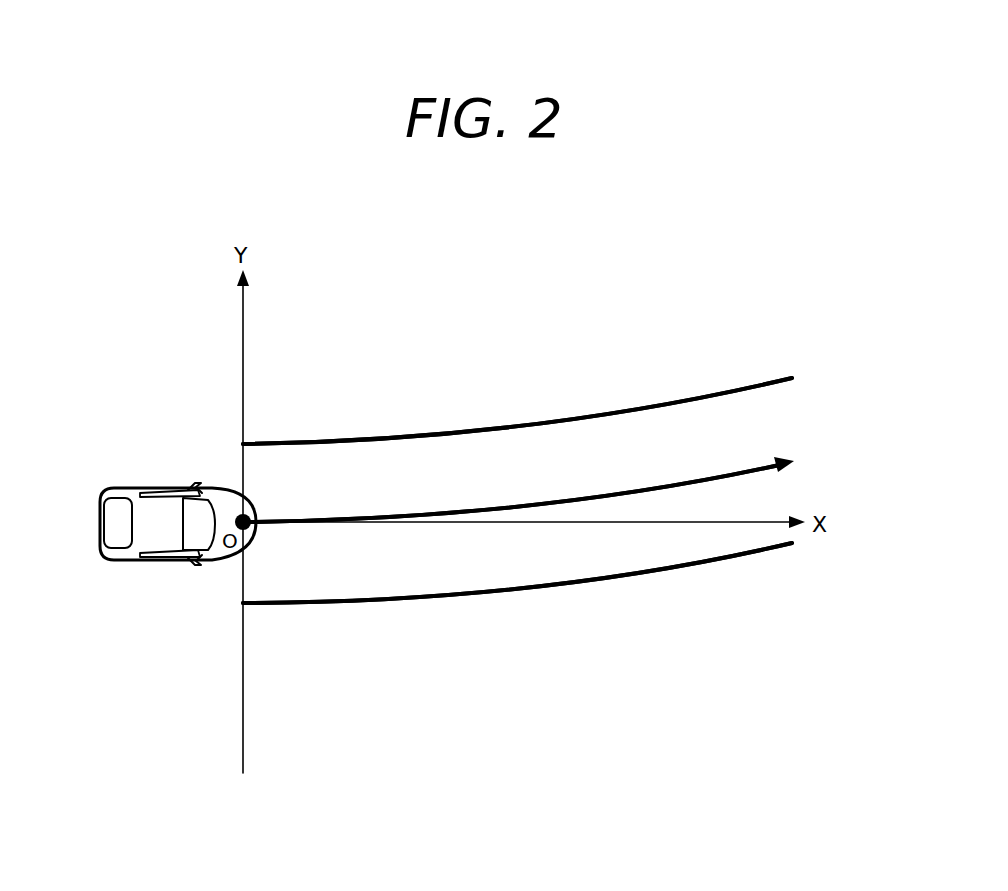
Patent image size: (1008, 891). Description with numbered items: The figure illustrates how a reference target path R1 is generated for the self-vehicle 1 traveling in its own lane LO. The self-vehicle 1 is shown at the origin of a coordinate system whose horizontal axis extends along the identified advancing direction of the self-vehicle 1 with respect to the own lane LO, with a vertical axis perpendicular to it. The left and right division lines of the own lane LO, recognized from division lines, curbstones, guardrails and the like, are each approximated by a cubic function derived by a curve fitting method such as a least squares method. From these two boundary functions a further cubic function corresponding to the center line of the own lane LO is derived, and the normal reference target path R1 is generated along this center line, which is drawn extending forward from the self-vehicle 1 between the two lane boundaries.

The self-vehicle 1 is at (99, 522).
The reference target path R1 is at (406, 514).
The own lane LO is at (778, 405).